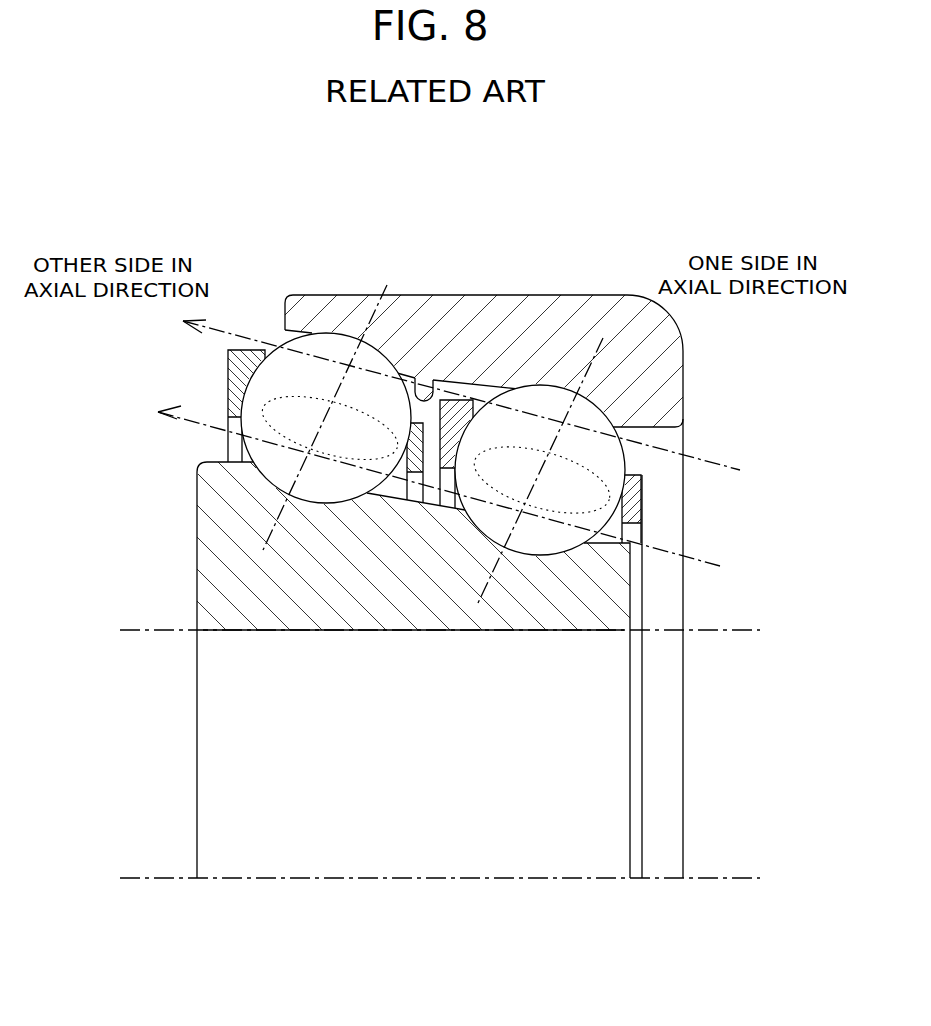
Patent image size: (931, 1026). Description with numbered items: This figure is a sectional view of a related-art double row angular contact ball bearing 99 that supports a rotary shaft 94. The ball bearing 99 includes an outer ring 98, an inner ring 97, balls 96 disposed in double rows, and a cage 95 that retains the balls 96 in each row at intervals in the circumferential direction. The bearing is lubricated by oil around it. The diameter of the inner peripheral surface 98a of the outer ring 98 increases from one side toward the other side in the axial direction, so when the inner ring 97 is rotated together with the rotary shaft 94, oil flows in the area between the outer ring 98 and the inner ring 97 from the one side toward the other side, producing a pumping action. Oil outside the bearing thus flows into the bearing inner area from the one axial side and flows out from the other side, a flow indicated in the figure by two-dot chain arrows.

The double row angular contact ball bearing 99 is at (573, 242).
The outer ring 98 is at (486, 295).
The inner peripheral surface 98a is at (424, 378).
The inner ring 97 is at (455, 631).
The balls 96 is at (322, 490).
The cage 95 is at (228, 370).
The rotary shaft 94 is at (143, 630).